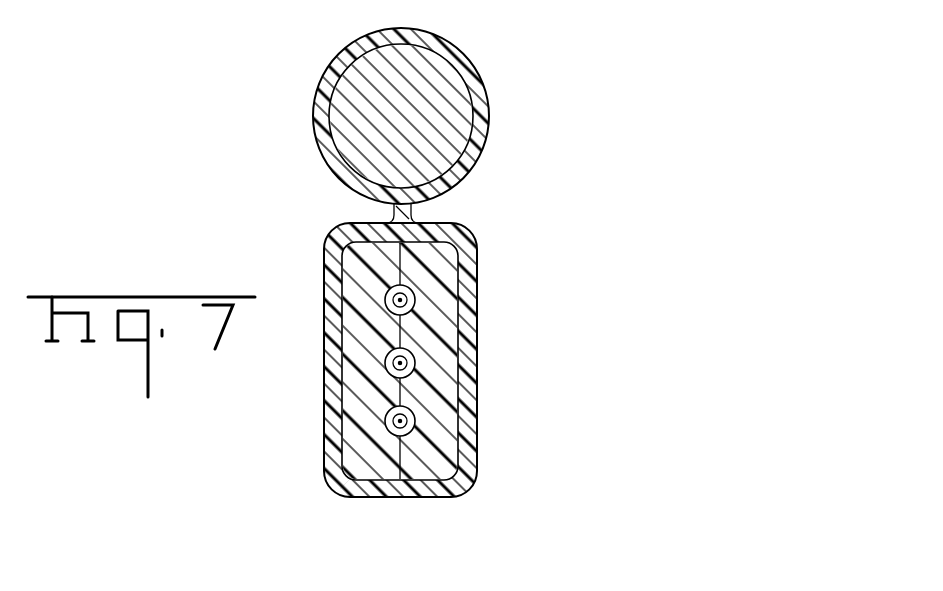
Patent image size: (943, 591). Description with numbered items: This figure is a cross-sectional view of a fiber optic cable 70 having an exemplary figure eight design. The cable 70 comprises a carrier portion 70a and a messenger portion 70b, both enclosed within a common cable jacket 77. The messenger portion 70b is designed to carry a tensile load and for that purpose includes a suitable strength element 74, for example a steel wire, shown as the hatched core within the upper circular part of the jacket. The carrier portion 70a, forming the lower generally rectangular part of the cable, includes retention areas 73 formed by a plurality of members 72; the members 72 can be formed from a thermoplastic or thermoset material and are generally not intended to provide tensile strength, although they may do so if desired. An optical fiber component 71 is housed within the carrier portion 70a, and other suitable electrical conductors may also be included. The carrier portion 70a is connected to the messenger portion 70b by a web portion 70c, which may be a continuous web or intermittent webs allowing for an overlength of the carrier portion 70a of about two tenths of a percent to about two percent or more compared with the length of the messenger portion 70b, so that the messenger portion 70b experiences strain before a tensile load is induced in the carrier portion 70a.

The fiber optic cable 70 is at (343, 33).
The carrier portion 70a is at (586, 226).
The messenger portion 70b is at (587, 198).
The web portion 70c is at (416, 210).
The optical fiber component 71 is at (393, 421).
The members 72 is at (413, 270).
The retention areas 73 is at (415, 420).
The strength element 74 is at (358, 127).
The cable jacket 77 is at (333, 482).